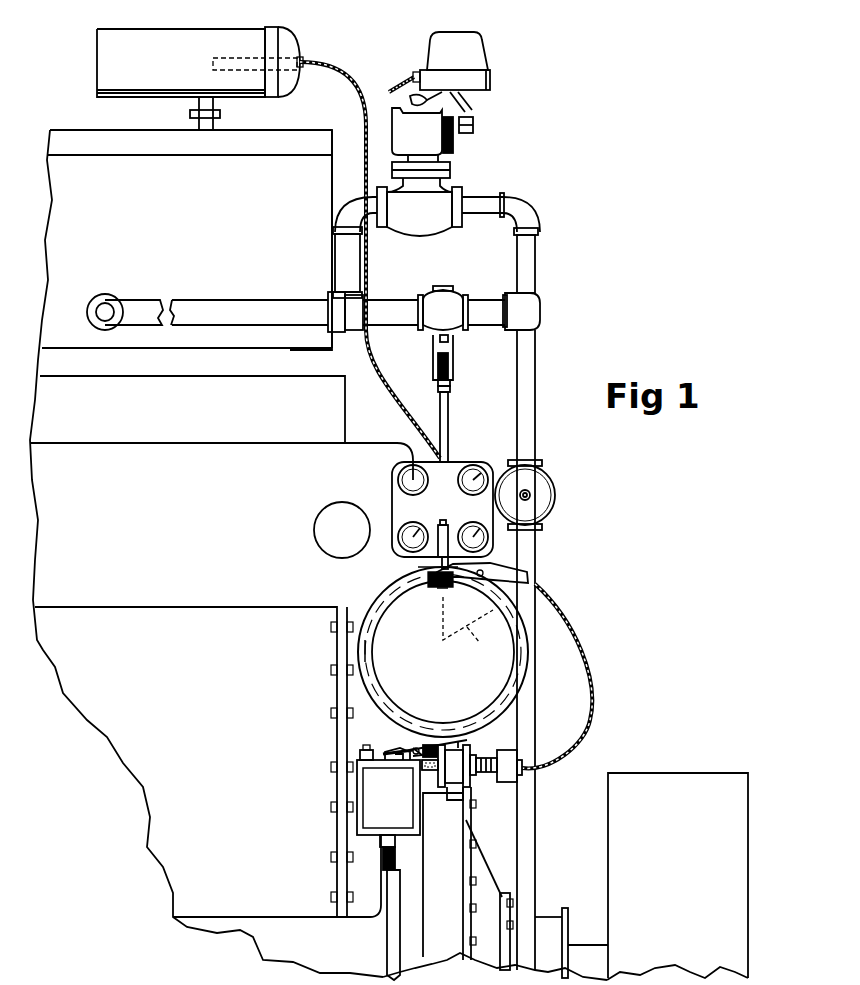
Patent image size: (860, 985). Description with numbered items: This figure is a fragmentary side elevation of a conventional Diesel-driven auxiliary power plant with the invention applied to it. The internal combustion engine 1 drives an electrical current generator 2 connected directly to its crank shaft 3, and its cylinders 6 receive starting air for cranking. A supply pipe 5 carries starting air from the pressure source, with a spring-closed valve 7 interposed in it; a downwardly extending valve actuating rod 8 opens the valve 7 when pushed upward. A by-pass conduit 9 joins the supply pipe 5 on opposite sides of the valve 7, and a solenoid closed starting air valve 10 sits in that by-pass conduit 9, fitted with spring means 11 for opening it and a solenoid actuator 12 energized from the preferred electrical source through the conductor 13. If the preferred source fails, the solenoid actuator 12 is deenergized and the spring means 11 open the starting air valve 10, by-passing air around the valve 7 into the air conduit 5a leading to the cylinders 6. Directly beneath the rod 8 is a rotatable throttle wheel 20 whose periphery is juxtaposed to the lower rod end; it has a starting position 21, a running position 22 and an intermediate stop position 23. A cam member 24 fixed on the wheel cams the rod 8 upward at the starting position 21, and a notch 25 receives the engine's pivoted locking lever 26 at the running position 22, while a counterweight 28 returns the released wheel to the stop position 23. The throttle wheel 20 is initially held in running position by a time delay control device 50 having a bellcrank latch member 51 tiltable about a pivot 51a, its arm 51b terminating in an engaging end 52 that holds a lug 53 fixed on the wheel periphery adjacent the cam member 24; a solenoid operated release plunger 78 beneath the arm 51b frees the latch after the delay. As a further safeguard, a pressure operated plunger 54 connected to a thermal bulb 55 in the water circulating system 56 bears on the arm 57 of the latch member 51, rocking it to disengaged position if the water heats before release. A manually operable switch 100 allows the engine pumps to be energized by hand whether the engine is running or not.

The internal combustion engine 1 is at (345, 462).
The electrical current generator 2 is at (695, 782).
The crank shaft 3 is at (583, 955).
The supply pipe 5 is at (483, 307).
The air conduit 5a is at (312, 308).
The cylinders 6 is at (272, 208).
The spring-closed valve 7 is at (450, 320).
The valve actuating rod 8 is at (449, 420).
The by-pass conduit 9 is at (360, 270).
The starting air valve 10 is at (427, 223).
The spring means 11 is at (453, 143).
The solenoid actuator 12 is at (488, 62).
The conductor 13 is at (410, 74).
The throttle wheel 20 is at (520, 660).
The starting position 21 is at (438, 745).
The running position 22 is at (437, 592).
The stop position 23 is at (383, 653).
The cam member 24 is at (440, 740).
The notch 25 is at (427, 577).
The locking lever 26 is at (530, 577).
The counterweight 28 is at (470, 624).
The time delay control device 50 is at (358, 822).
The latch member 51 is at (385, 750).
The pivot 51a is at (418, 746).
The arm 51b is at (385, 752).
The engaging end 52 is at (460, 742).
The lug 53 is at (469, 743).
The pressure operated plunger 54 is at (462, 793).
The thermal bulb 55 is at (303, 60).
The water circulating system 56 is at (185, 24).
The arm 57 is at (418, 762).
The release plunger 78 is at (388, 762).
The manually operable switch 100 is at (360, 747).